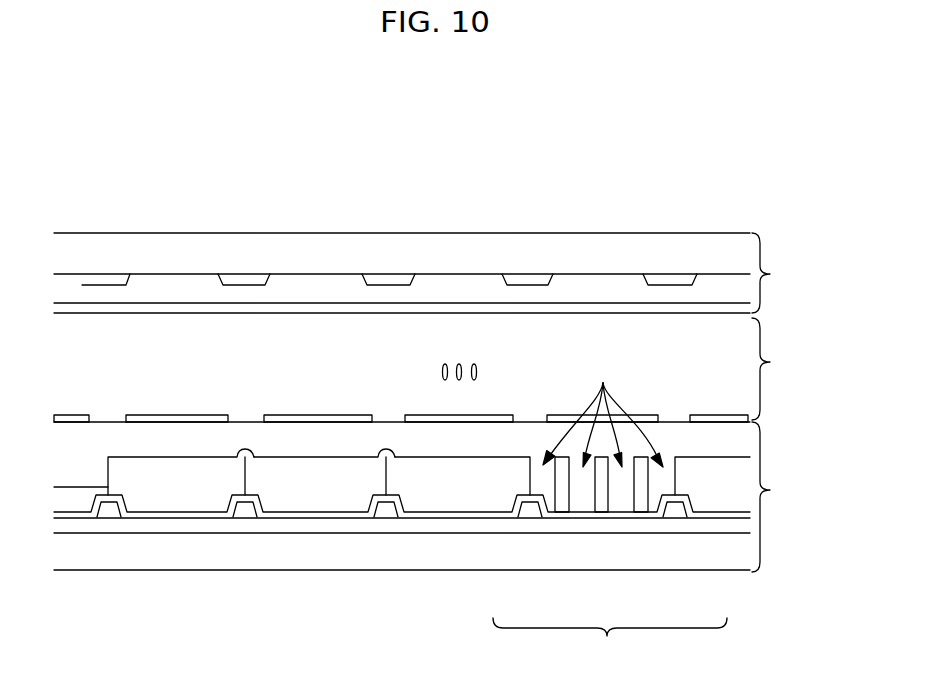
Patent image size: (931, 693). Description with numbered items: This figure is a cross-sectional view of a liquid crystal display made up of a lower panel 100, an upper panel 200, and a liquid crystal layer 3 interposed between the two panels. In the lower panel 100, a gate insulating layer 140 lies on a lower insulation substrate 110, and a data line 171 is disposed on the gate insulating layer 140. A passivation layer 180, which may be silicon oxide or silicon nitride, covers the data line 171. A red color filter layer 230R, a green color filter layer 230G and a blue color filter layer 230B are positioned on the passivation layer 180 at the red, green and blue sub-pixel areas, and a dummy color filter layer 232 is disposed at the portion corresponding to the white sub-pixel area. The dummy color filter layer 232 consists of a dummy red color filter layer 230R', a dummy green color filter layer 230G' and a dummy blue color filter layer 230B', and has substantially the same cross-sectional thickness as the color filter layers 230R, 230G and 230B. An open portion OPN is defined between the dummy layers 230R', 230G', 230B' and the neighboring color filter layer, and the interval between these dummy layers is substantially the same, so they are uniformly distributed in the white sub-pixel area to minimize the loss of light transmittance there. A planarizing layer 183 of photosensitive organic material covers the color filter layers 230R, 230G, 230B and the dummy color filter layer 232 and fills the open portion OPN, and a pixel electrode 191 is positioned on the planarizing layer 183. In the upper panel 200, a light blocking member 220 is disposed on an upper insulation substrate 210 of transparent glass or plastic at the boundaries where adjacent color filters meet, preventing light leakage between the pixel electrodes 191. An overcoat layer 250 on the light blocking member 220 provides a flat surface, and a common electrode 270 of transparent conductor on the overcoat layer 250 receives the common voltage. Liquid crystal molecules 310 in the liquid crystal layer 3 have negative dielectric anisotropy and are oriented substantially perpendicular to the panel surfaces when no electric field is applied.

The upper insulation substrate 210 is at (313, 240).
The overcoat layer 250 is at (452, 283).
The light blocking member 220 is at (518, 278).
The common electrode 270 is at (595, 308).
The upper panel 200 is at (781, 273).
The liquid crystal layer 3 is at (768, 369).
The liquid crystal molecules 310 is at (483, 372).
The pixel electrode 191 is at (315, 413).
The planarizing layer 183 is at (679, 440).
The open portion OPN is at (603, 409).
The blue color filter layer 230B is at (429, 475).
The green color filter layer 230G is at (324, 475).
The red color filter layer 230R is at (462, 479).
The dummy red color filter layer 230R' is at (535, 538).
The dummy green color filter layer 230G' is at (613, 538).
The dummy blue color filter layer 230B' is at (678, 538).
The dummy color filter layer 232 is at (610, 642).
The passivation layer 180 is at (196, 518).
The data line 171 is at (243, 518).
The gate insulating layer 140 is at (422, 525).
The lower insulation substrate 110 is at (330, 565).
The lower panel 100 is at (781, 497).